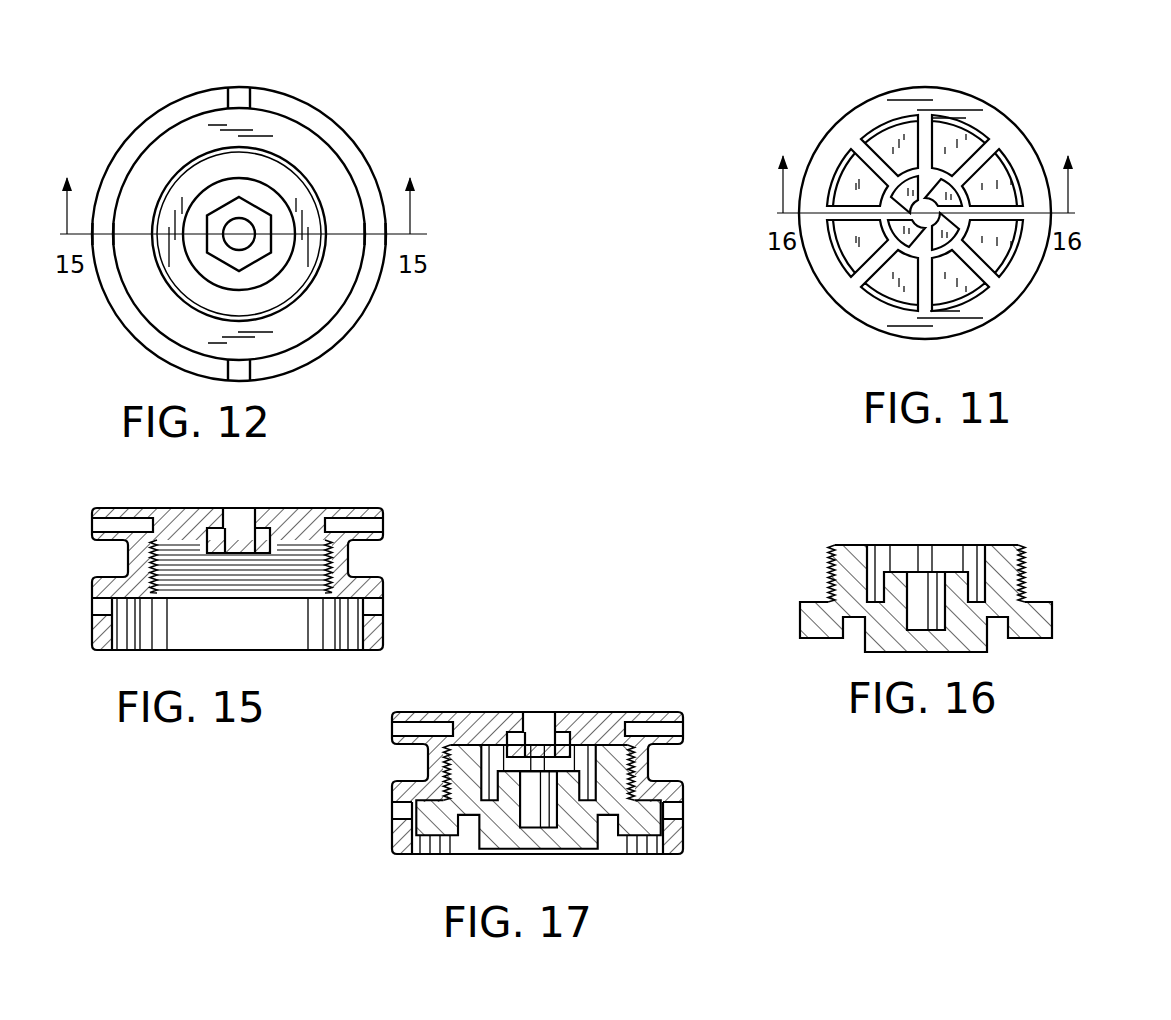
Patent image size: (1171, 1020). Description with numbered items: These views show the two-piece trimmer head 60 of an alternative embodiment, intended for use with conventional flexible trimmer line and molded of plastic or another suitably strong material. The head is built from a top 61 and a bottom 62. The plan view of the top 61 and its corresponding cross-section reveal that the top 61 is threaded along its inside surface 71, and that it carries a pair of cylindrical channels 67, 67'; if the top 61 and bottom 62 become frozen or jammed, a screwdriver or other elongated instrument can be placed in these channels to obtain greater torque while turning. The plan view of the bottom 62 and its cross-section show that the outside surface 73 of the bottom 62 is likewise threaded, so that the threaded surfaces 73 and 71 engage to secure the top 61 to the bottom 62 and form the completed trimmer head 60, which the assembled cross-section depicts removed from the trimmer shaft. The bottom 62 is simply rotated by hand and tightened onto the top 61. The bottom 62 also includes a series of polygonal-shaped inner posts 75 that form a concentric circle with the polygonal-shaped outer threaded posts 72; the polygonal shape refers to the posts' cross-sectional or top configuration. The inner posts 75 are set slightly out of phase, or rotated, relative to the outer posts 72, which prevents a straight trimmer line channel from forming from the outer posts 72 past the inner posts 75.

In FIG. 17, the trimmer head 60 is at (698, 757).
In FIG. 12, the top 61 is at (330, 107).
In FIG. 15, the top 61 is at (312, 507).
In FIG. 17, the top 61 is at (537, 708).
In FIG. 11, the bottom 62 is at (1062, 107).
In FIG. 16, the bottom 62 is at (1035, 492).
In FIG. 17, the bottom 62 is at (642, 857).
In FIG. 15, the cylindrical channel 67 is at (397, 528).
In FIG. 15, the cylindrical channel 67' is at (84, 540).
In FIG. 12, the inside surface 71 is at (288, 189).
In FIG. 15, the inside surface 71 is at (313, 573).
In FIG. 11, the outer threaded posts 72 is at (880, 140).
In FIG. 16, the outside surface 73 is at (1038, 560).
In FIG. 11, the inner posts 75 is at (925, 213).